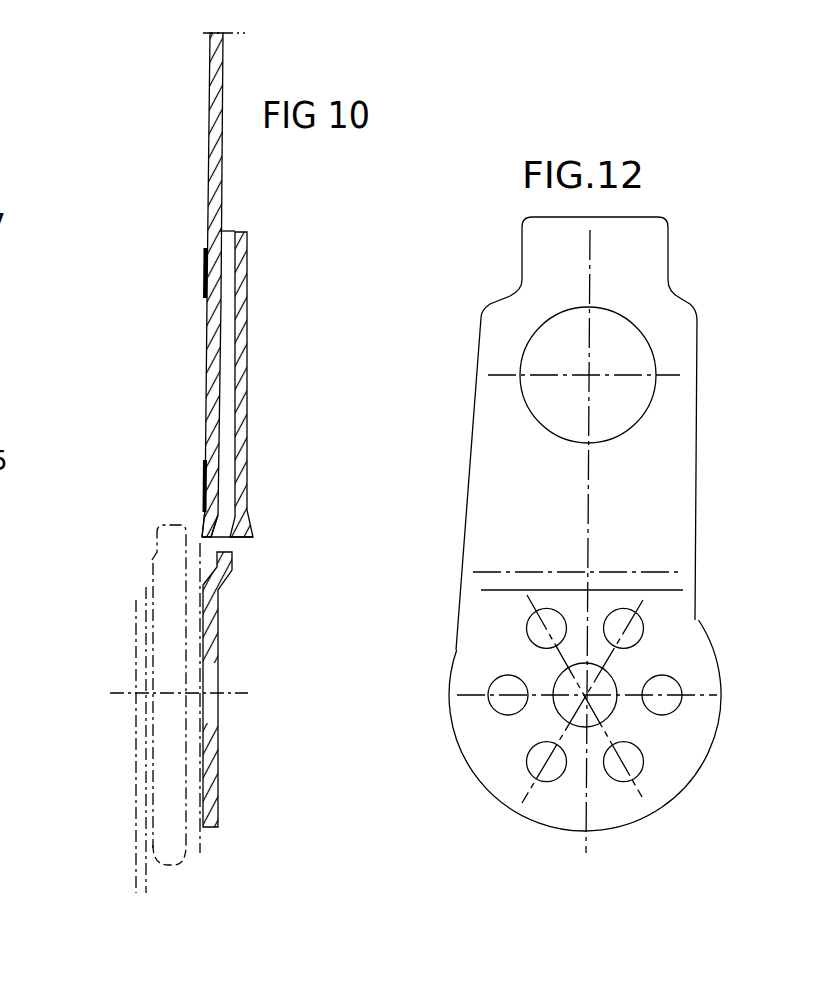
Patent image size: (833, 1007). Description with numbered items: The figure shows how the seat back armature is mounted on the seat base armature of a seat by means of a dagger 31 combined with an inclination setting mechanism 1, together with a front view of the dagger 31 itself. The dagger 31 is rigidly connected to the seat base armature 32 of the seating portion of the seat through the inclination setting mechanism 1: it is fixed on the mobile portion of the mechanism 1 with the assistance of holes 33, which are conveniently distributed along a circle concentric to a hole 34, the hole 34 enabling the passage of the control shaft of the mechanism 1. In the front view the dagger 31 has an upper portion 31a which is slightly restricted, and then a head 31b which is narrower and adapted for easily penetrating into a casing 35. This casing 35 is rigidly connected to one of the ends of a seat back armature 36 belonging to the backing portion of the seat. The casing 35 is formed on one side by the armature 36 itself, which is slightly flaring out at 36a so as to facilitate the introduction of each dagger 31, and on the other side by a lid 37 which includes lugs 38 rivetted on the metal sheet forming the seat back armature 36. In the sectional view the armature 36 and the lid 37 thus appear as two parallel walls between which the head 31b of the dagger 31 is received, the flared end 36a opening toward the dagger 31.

In FIG. 10, the inclination setting mechanism 1 is at (168, 562).
In FIG. 10, the dagger 31 is at (231, 573).
In FIG. 12, the dagger 31 is at (662, 546).
In FIG. 12, the upper portion 31a is at (668, 430).
In FIG. 12, the head 31b is at (637, 250).
In FIG. 10, the seat base armature 32 is at (140, 712).
In FIG. 12, the holes 33 is at (643, 631).
In FIG. 12, the hole 34 is at (603, 708).
In FIG. 10, the casing 35 is at (229, 380).
In FIG. 10, the seat back armature 36 is at (212, 80).
In FIG. 10, the flaring out 36a is at (203, 520).
In FIG. 10, the lid 37 is at (247, 268).
In FIG. 10, the lugs 38 is at (205, 270).